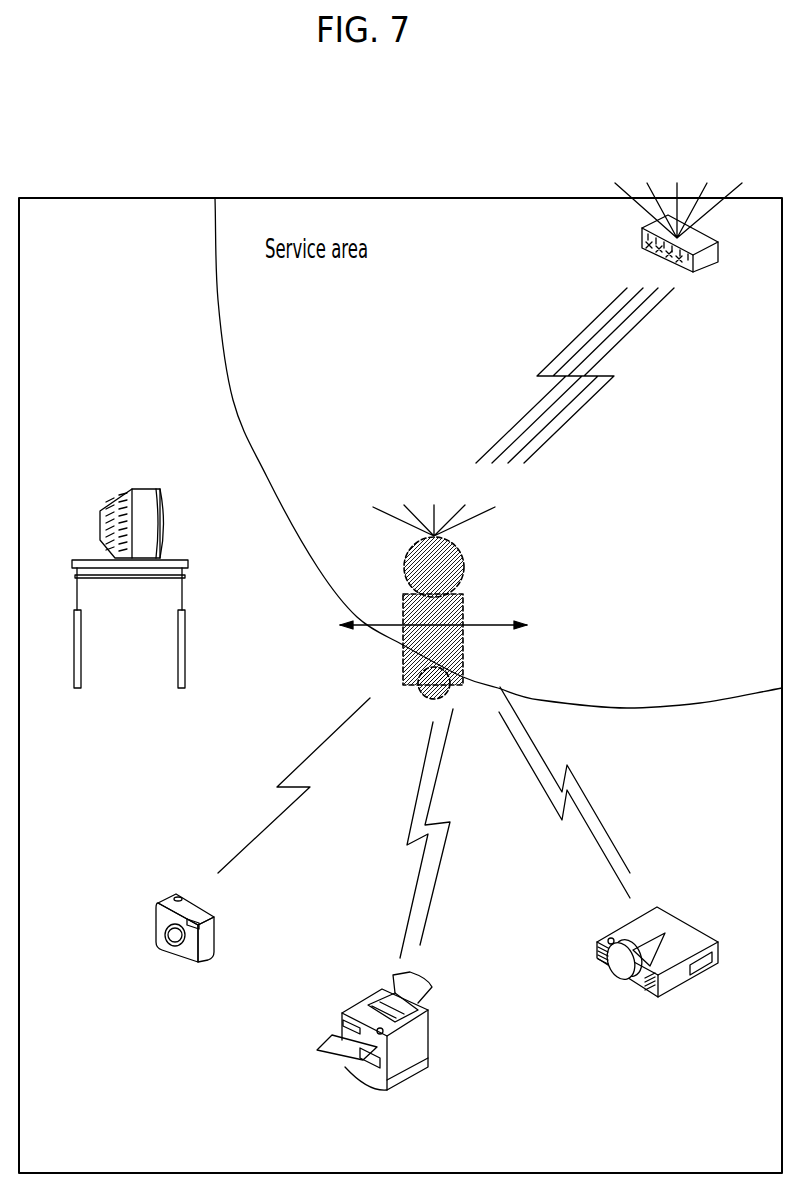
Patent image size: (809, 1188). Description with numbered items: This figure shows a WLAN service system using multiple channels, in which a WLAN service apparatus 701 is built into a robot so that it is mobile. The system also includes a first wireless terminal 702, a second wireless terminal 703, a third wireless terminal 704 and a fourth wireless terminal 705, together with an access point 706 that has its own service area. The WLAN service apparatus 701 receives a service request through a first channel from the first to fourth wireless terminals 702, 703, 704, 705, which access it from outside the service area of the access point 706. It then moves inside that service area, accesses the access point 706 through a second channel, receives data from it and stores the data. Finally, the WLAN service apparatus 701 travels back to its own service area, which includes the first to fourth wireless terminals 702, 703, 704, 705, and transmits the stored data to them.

The WLAN service apparatus 701 is at (466, 568).
The first wireless terminal 702 is at (147, 488).
The second wireless terminal 703 is at (218, 932).
The third wireless terminal 704 is at (432, 1035).
The fourth wireless terminal 705 is at (680, 918).
The access point 706 is at (642, 238).